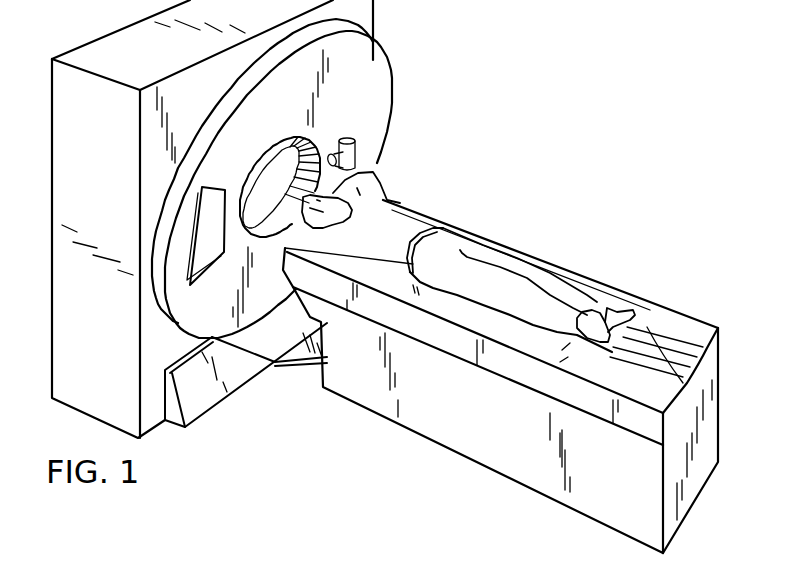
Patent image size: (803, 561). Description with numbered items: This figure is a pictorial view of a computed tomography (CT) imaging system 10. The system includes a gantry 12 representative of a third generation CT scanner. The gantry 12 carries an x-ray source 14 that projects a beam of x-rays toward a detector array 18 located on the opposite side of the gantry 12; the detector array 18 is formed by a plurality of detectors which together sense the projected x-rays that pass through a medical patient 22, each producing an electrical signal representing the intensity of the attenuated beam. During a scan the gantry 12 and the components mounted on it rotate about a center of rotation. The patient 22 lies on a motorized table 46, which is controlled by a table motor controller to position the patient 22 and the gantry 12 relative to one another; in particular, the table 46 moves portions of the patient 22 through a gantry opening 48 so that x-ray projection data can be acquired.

The computed tomography (CT) imaging system 10 is at (385, 276).
The gantry 12 is at (235, 219).
The x-ray source 14 is at (356, 155).
The detector array 18 is at (204, 265).
The medical patient 22 is at (408, 222).
The motorized table 46 is at (488, 457).
The gantry opening 48 is at (266, 183).